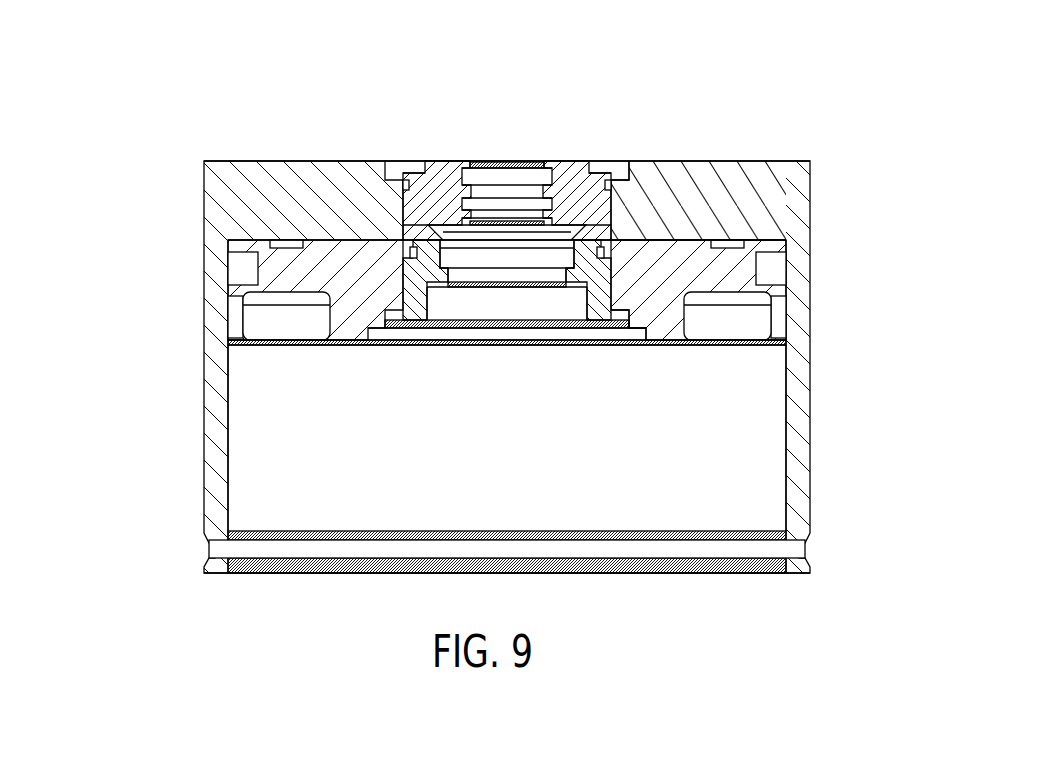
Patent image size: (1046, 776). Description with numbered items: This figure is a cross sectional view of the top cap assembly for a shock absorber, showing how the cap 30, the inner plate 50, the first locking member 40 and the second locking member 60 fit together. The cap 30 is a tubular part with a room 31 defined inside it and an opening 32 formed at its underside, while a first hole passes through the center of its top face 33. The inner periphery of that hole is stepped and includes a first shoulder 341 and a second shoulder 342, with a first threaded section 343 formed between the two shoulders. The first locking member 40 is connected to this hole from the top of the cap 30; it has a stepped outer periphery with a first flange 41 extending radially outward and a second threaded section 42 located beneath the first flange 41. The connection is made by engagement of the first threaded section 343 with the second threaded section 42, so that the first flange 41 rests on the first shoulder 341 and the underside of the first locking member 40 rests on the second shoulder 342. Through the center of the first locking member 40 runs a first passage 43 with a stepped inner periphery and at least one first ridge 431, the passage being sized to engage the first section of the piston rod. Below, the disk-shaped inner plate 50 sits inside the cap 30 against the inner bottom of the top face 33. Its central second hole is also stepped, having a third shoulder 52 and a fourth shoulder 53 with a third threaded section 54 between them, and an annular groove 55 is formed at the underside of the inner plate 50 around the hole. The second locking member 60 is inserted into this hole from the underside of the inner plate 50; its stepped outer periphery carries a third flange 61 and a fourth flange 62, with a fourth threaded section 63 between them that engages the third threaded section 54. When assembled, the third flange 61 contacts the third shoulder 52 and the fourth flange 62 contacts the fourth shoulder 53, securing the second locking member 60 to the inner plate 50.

The cap 30 is at (216, 359).
The room 31 is at (250, 462).
The opening 32 is at (281, 563).
The top face 33 is at (243, 160).
The first locking member 40 is at (613, 207).
The first flange 41 is at (398, 162).
The second threaded section 42 is at (403, 200).
The first passage 43 is at (523, 165).
The first ridge 431 is at (485, 195).
The first shoulder 341 is at (622, 170).
The second shoulder 342 is at (593, 226).
The first threaded section 343 is at (408, 214).
The inner plate 50 is at (741, 276).
The third shoulder 52 is at (665, 248).
The fourth shoulder 53 is at (626, 318).
The third threaded section 54 is at (608, 278).
The annular groove 55 is at (287, 318).
The second locking member 60 is at (430, 289).
The third flange 61 is at (410, 250).
The fourth flange 62 is at (395, 323).
The fourth threaded section 63 is at (617, 247).